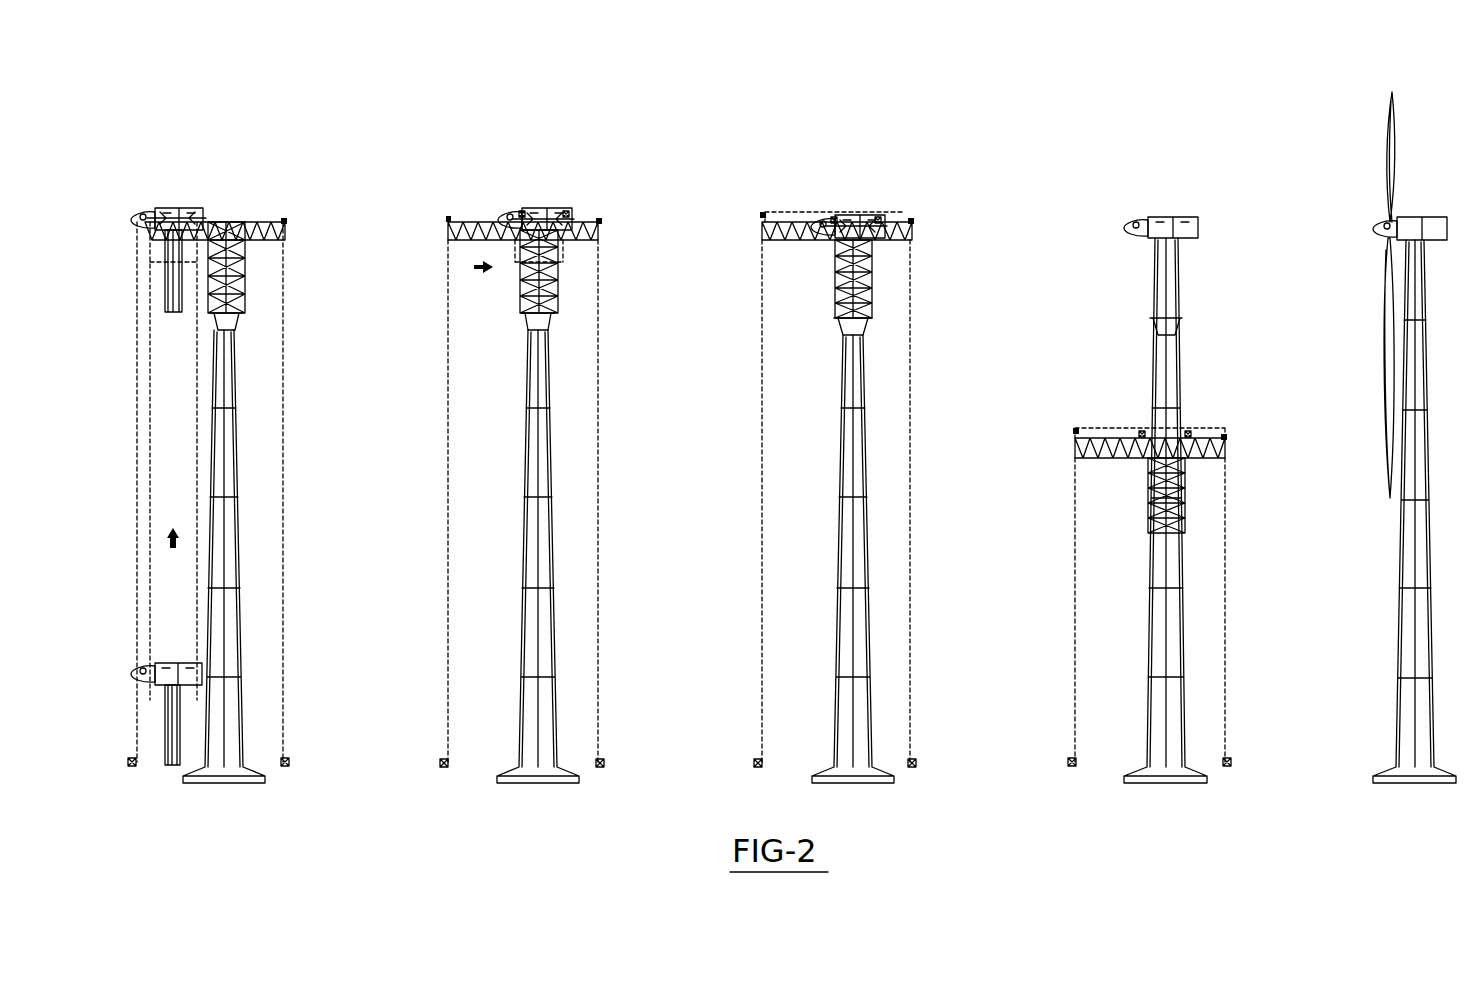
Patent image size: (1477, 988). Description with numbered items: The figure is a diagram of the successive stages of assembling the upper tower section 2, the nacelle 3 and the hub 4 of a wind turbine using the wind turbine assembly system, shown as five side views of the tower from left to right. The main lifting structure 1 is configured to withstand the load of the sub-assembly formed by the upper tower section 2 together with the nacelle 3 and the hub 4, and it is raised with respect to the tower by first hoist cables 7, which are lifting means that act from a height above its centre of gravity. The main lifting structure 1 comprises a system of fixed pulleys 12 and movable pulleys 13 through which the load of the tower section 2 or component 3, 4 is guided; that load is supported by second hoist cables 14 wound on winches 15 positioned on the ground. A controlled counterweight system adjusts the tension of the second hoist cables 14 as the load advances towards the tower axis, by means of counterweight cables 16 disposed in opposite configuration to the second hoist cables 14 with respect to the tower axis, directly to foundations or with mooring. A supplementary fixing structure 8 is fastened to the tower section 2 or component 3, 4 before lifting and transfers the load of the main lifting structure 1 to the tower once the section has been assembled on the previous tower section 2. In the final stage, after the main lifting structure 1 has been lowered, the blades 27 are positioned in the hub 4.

The main lifting structure 1 is at (255, 222).
The tower section 2 is at (165, 298).
The nacelle 3 is at (202, 208).
The hub 4 is at (145, 212).
The first hoist cables 7 is at (183, 215).
The supplementary fixing structure 8 is at (240, 318).
The fixed pulleys 12 is at (285, 221).
The movable pulleys 13 is at (522, 208).
The second hoist cables 14 is at (197, 413).
The winches 15 is at (128, 768).
The counterweight cables 16 is at (136, 504).
The blades 27 is at (1388, 128).